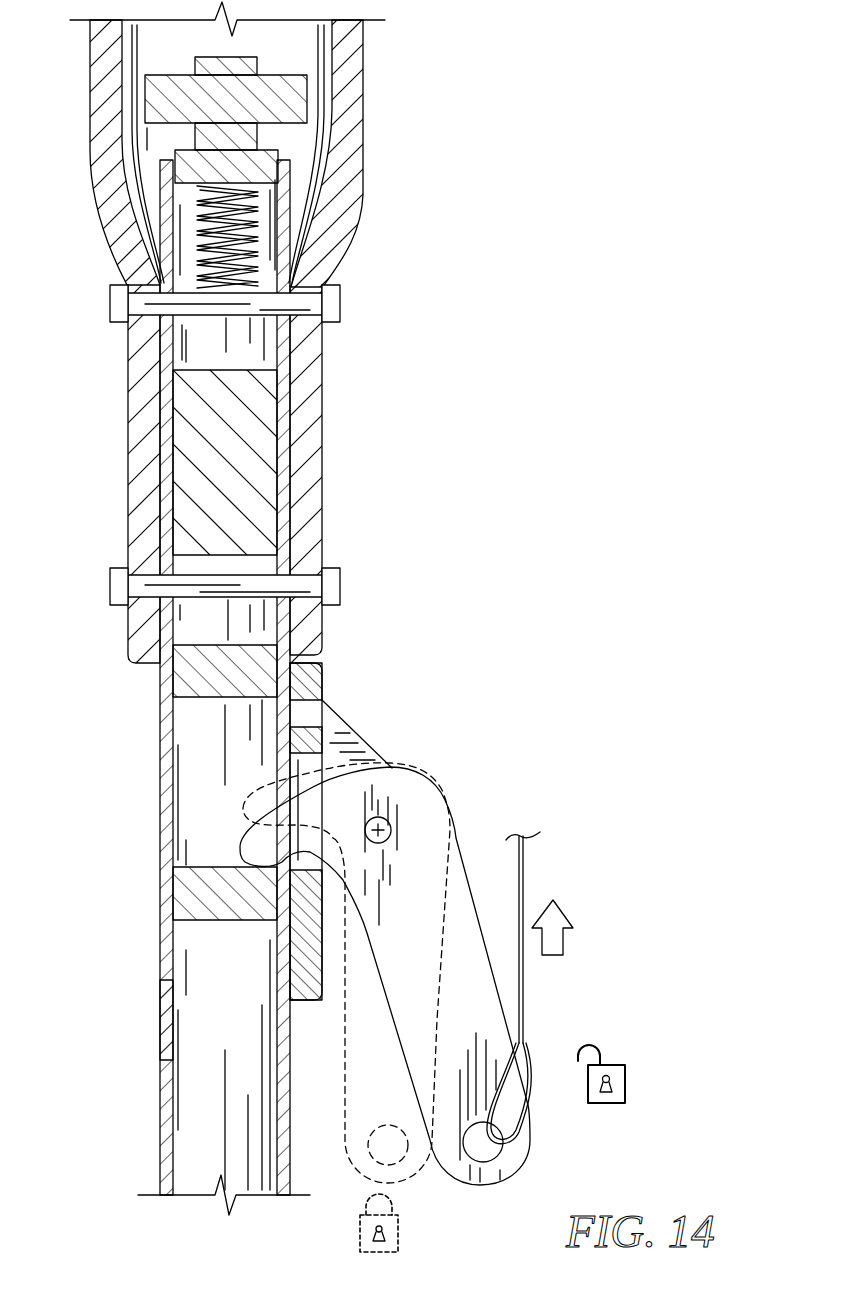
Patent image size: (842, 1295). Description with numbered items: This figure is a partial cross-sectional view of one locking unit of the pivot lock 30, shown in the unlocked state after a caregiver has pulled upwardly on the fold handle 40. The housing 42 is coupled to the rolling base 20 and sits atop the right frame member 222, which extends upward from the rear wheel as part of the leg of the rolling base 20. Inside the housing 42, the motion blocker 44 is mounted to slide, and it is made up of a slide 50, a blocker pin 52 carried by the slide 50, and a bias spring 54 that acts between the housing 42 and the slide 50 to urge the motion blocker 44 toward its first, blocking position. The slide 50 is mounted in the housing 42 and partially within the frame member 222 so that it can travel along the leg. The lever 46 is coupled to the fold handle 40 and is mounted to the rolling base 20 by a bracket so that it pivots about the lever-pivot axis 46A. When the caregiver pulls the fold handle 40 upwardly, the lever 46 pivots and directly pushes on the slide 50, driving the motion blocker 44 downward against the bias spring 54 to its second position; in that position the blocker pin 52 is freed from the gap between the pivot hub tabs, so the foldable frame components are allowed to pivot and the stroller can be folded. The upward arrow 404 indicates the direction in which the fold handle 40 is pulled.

The rolling base 20 is at (159, 1077).
The pivot lock 30 is at (376, 382).
The fold handle 40 is at (528, 857).
The housing 42 is at (326, 452).
The motion blocker 44 is at (252, 362).
The lever 46 is at (462, 841).
The lever-pivot axis 46A is at (390, 828).
The slide 50 is at (200, 860).
The blocker pin 52 is at (166, 130).
The bias spring 54 is at (203, 292).
The right frame member 222 is at (159, 1018).
The pull direction arrow 404 is at (567, 945).